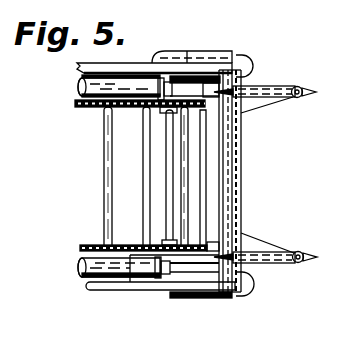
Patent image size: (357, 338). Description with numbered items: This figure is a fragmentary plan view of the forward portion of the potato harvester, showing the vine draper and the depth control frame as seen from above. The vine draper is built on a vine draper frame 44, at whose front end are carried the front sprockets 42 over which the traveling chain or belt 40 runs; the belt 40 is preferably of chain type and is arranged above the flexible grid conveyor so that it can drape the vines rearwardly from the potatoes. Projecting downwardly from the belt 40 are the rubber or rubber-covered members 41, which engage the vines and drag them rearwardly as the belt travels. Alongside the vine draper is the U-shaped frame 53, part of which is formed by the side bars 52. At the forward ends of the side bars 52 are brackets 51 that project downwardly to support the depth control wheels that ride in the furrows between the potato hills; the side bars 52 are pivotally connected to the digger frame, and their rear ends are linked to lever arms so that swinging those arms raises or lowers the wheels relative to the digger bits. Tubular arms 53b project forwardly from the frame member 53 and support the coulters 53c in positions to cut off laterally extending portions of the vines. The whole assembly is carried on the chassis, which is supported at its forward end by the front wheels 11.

The front wheels 11 is at (242, 64).
The traveling chain or belt 40 is at (95, 243).
The downwardly projecting rubber or rubber-covered members 41 is at (104, 194).
The front sprockets 42 is at (165, 111).
The vine draper frame 44 is at (80, 80).
The brackets 51 is at (190, 63).
The side bars 52 is at (143, 289).
The U-shaped frame 53 is at (228, 186).
The tubular arms 53b is at (266, 86).
The coulters 53c is at (297, 97).